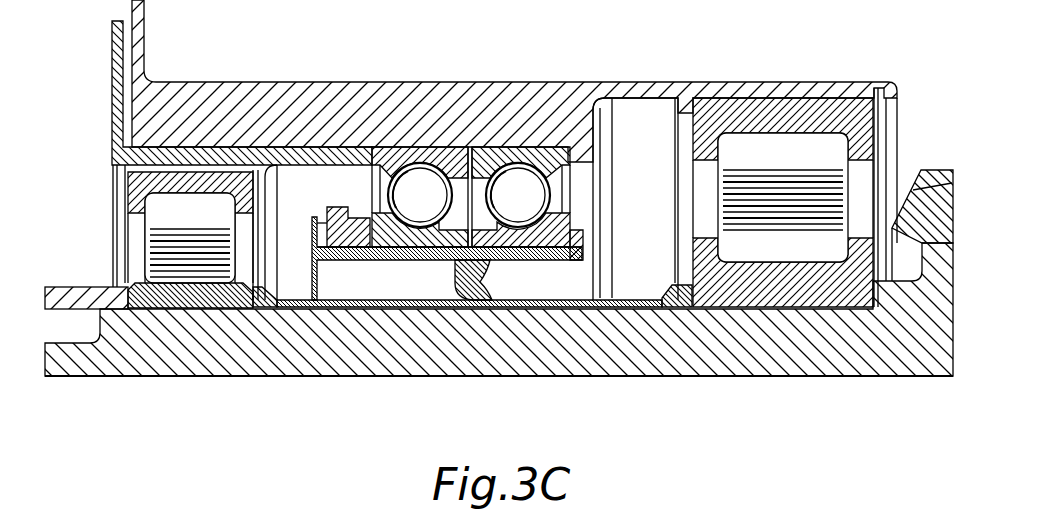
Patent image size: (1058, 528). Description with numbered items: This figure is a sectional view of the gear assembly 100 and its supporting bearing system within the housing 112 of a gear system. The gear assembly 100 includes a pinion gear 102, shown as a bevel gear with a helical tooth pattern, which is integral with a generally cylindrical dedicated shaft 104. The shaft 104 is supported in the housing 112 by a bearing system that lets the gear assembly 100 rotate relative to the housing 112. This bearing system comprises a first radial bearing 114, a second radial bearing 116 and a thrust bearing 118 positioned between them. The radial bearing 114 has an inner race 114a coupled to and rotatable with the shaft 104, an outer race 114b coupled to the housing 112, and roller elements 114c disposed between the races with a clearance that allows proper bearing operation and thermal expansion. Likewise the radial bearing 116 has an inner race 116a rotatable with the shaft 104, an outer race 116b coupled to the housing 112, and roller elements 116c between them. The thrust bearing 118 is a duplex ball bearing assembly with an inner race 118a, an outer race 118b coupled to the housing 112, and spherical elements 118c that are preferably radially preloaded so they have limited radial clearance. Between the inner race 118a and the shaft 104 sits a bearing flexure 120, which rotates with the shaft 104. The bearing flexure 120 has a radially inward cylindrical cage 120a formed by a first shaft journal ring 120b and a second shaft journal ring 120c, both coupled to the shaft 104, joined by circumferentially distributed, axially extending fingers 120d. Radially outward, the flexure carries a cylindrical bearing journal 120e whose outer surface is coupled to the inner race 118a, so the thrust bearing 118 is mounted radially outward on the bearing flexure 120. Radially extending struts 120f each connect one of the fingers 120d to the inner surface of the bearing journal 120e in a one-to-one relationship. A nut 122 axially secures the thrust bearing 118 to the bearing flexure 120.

The gear assembly 100 is at (768, 384).
The pinion gear 102 is at (927, 202).
The shaft 104 is at (205, 365).
The housing 112 is at (390, 95).
The radial bearing 114 is at (210, 160).
The inner race 114a is at (157, 302).
The outer race 114b is at (233, 170).
The roller elements 114c is at (188, 207).
The radial bearing 116 is at (797, 83).
The inner race 116a is at (828, 293).
The outer race 116b is at (833, 115).
The roller elements 116c is at (747, 150).
The thrust bearing 118 is at (448, 138).
The inner race 118a is at (417, 240).
The outer race 118b is at (497, 152).
The spherical elements 118c is at (552, 170).
The bearing flexure 120 is at (551, 272).
The cylindrical cage 120a is at (606, 330).
The first shaft journal ring 120b is at (676, 308).
The second shaft journal ring 120c is at (270, 307).
The fingers 120d is at (360, 302).
The cylindrical bearing journal 120e is at (510, 248).
The struts 120f is at (463, 298).
The nut 122 is at (338, 207).